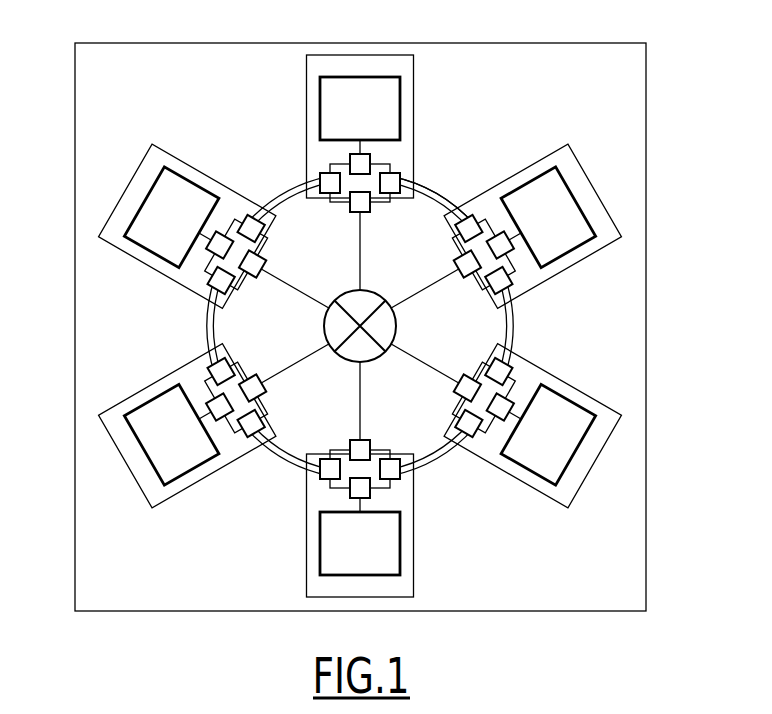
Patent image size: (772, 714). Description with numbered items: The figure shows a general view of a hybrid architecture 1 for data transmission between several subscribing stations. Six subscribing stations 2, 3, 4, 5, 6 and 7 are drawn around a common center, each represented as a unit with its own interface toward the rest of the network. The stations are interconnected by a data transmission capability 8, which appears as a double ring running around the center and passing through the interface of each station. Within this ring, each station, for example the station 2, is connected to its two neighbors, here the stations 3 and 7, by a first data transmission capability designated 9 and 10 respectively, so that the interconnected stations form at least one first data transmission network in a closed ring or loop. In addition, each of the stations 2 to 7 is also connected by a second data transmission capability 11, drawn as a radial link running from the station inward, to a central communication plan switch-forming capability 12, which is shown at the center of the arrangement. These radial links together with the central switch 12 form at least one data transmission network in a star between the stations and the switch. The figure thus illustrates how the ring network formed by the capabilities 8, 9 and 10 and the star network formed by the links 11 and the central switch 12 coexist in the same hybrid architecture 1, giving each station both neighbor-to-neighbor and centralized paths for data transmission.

The hybrid architecture 1 is at (665, 58).
The subscribing station 2 is at (615, 198).
The subscribing station 3 is at (423, 87).
The subscribing station 4 is at (193, 140).
The subscribing station 5 is at (102, 465).
The subscribing station 6 is at (417, 607).
The subscribing station 7 is at (607, 475).
The data transmission capability 8 is at (193, 325).
The first data transmission capability 9 is at (483, 147).
The first data transmission capability 10 is at (530, 328).
The second data transmission capability 11 is at (422, 330).
The central communication plan switch-forming capability 12 is at (333, 365).